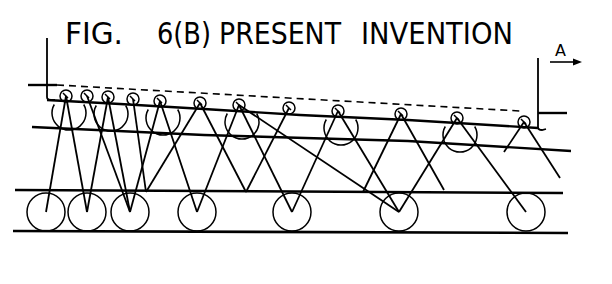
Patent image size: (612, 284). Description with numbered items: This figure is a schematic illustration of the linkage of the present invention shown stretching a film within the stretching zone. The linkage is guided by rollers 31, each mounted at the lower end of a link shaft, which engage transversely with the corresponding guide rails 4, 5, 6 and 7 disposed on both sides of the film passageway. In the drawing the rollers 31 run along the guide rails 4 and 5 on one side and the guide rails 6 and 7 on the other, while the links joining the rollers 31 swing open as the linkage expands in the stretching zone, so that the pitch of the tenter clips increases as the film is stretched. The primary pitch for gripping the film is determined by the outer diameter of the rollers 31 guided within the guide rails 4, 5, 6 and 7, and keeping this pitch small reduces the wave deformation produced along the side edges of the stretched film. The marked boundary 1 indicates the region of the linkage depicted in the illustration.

The fibrous web 1 is at (530, 77).
The guide rail 4 is at (455, 233).
The guide rail 5 is at (548, 192).
The guide rail 6 is at (557, 151).
The guide rail 7 is at (553, 113).
The roller 31 is at (466, 144).